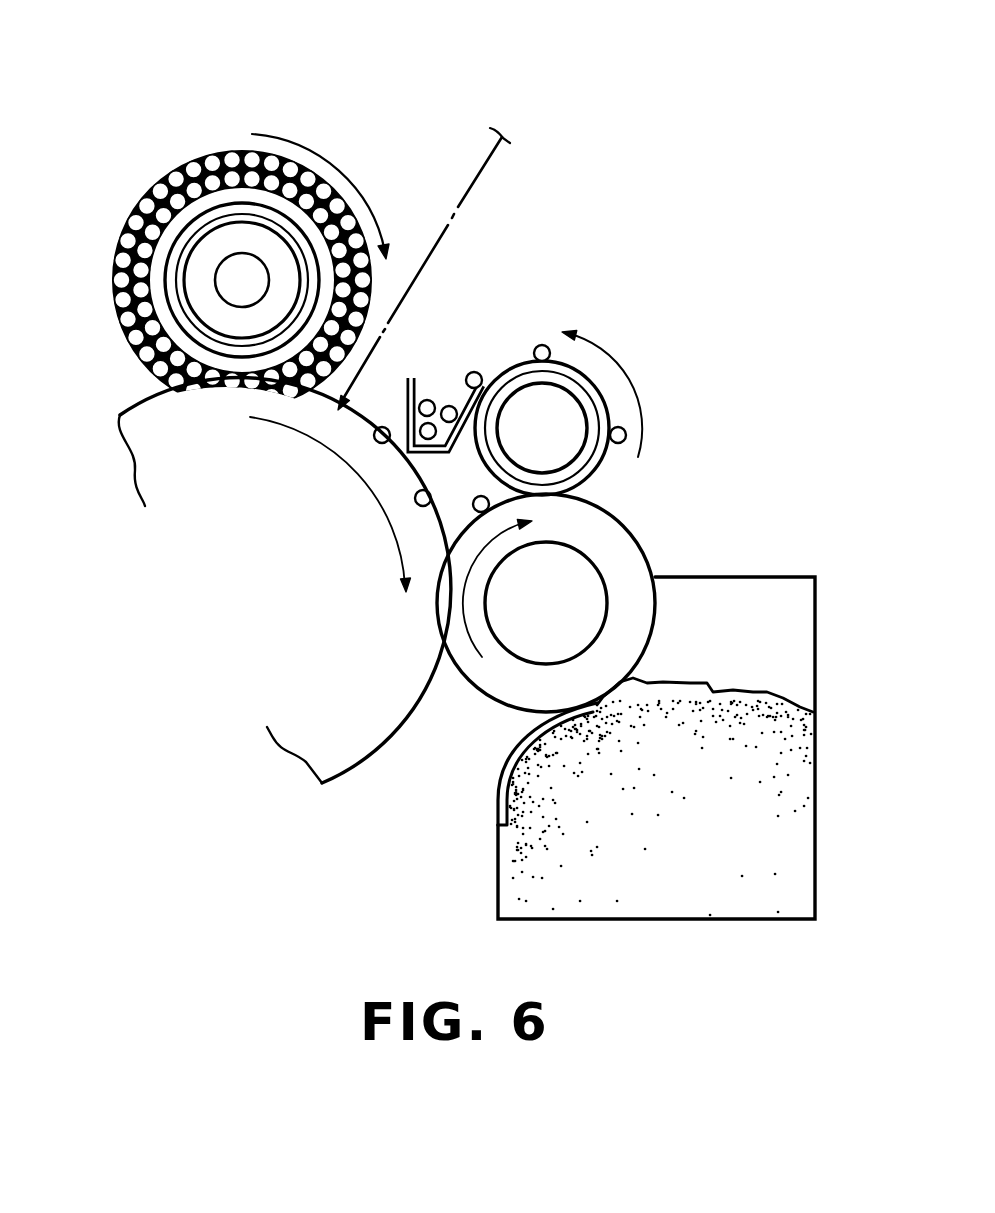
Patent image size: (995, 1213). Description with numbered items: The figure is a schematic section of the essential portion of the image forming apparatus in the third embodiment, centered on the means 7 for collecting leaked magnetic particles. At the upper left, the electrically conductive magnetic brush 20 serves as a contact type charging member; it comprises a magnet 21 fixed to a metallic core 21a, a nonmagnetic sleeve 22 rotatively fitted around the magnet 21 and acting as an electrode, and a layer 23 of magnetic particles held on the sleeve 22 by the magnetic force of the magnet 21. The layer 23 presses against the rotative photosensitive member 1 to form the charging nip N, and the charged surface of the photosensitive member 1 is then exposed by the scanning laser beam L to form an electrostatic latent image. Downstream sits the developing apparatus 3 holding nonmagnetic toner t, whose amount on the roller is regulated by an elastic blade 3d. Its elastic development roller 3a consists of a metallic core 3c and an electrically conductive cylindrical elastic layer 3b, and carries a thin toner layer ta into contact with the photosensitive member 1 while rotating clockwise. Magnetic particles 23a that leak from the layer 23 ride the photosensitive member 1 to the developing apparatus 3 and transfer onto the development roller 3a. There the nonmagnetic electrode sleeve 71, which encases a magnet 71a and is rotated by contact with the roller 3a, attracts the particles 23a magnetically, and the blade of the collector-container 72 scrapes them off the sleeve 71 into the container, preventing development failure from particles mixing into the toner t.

The electrically conductive magnetic brush 20 is at (375, 66).
The metallic core 21a is at (230, 273).
The magnet 21 is at (228, 232).
The nonmagnetic sleeve 22 is at (253, 198).
The layer of magnetic particles 23 is at (296, 185).
The leaked magnetic particles 23a is at (382, 426).
The scanning laser beam L is at (472, 182).
The means for collecting the magnetic particles 7 is at (534, 273).
The nonmagnetic electrode sleeve 71 is at (595, 398).
The magnet 71a is at (546, 402).
The collector-container 72 is at (417, 450).
The photosensitive member 1 is at (150, 457).
The charging nip N is at (235, 390).
The developing apparatus 3 is at (662, 717).
The elastic development roller 3a is at (620, 586).
The electrically conductive cylindrical elastic layer 3b is at (620, 538).
The metallic core 3c is at (582, 596).
The elastic blade 3d is at (515, 742).
The nonmagnetic toner t is at (710, 688).
The toner layer ta is at (470, 683).